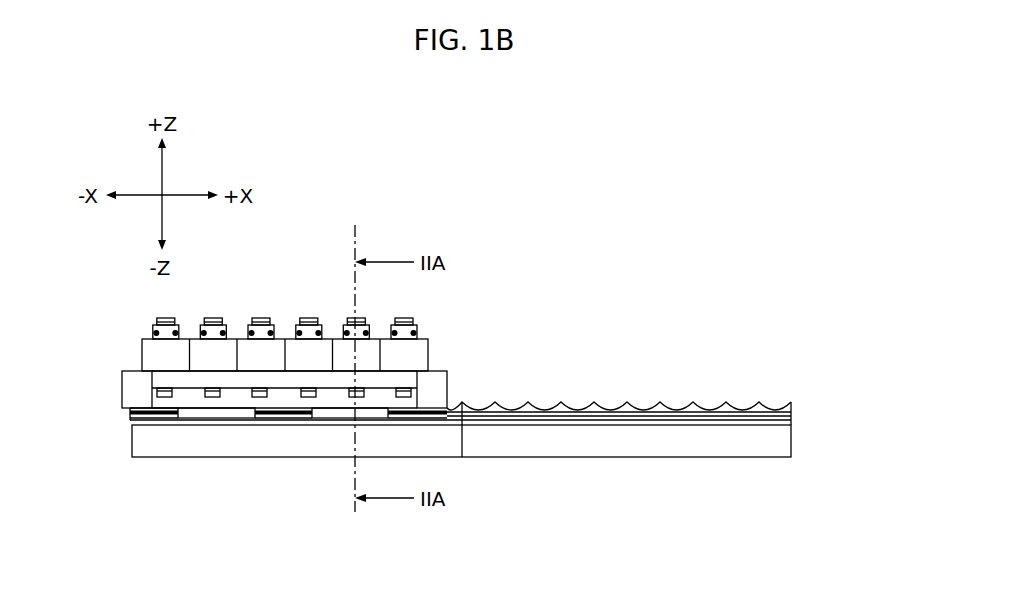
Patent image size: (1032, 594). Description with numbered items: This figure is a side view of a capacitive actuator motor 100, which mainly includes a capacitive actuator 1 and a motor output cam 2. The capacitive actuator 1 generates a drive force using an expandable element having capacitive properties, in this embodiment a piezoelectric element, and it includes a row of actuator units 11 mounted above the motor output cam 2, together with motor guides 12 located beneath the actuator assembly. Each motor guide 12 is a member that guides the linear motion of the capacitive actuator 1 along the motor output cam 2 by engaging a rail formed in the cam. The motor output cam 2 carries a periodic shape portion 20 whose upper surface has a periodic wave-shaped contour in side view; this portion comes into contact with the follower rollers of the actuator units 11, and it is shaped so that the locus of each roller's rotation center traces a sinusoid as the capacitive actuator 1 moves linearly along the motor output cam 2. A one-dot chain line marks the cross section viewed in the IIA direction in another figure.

The capacitive actuator motor 100 is at (612, 338).
The capacitive actuator 1 is at (453, 326).
The actuator unit 11 is at (379, 338).
The motor guide 12 is at (313, 420).
The motor output cam 2 is at (811, 398).
The periodic shape portion 20 is at (722, 405).